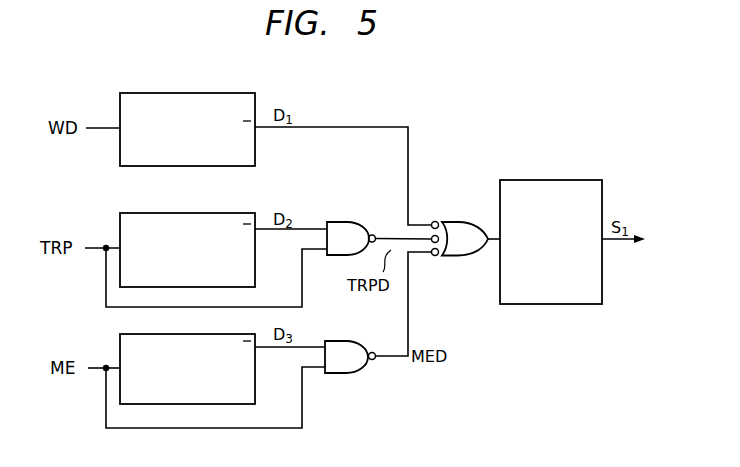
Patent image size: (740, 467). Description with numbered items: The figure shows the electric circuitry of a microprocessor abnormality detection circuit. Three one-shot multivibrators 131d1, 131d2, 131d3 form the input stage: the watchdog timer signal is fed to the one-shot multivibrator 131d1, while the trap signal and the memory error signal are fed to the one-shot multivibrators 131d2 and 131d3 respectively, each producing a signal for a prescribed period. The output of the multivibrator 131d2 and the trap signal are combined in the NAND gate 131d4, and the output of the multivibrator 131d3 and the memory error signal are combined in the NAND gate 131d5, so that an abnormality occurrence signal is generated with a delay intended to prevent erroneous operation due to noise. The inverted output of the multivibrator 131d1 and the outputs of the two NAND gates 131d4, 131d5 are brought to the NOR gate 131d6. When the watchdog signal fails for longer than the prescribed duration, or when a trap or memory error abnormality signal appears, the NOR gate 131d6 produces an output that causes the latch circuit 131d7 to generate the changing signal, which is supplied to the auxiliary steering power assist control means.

The one-shot multivibrator 131d1 is at (228, 93).
The one-shot multivibrator 131d2 is at (227, 213).
The one-shot multivibrator 131d3 is at (120, 341).
The NAND gate 131d4 is at (347, 222).
The NAND gate 131d5 is at (349, 341).
The NOR gate 131d6 is at (462, 222).
The latch circuit 131d7 is at (581, 180).